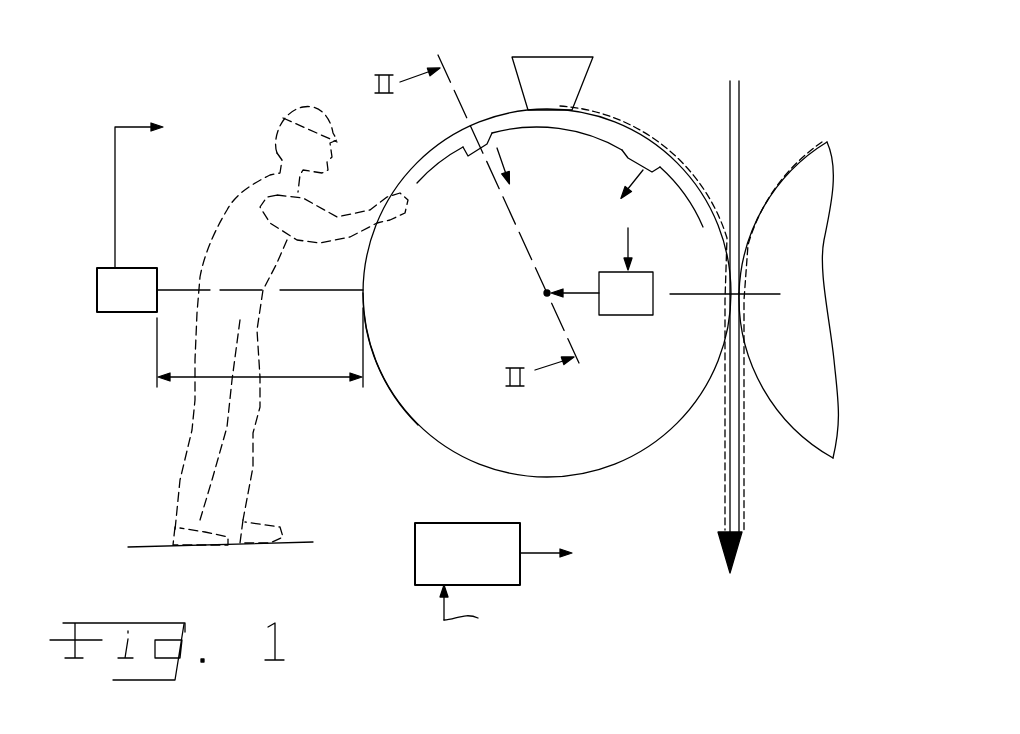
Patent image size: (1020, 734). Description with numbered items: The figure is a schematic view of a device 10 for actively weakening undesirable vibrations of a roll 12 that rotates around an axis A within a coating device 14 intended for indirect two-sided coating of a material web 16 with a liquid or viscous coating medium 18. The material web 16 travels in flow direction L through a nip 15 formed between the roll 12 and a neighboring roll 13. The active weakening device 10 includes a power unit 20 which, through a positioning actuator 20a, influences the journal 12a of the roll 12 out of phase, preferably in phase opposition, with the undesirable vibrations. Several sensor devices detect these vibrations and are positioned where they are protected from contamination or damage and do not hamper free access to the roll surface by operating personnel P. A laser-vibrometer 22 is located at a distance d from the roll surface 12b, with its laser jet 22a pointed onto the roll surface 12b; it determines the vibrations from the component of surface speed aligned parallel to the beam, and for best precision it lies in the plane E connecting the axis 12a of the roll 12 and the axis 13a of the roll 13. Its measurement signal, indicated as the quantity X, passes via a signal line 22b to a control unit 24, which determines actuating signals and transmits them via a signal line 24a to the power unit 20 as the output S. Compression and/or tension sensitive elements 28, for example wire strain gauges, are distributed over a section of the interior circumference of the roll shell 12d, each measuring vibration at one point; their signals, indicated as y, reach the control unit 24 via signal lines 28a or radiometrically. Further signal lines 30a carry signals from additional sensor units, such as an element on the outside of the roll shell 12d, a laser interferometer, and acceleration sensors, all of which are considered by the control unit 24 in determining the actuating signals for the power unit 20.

The active weakening device 10 is at (228, 75).
The roll 12 is at (608, 455).
The roll journal 12a is at (545, 292).
The roll surface 12b is at (378, 390).
The roll shell 12d is at (437, 152).
The neighboring roll 13 is at (790, 416).
The axis of neighboring roll 13a is at (845, 307).
The coating device 14 is at (783, 70).
The nip 15 is at (722, 400).
The material web 16 is at (740, 122).
The coating medium 18 is at (765, 195).
The power unit 20 is at (650, 308).
The positioning actuator 20a is at (585, 294).
The laser-vibrometer 22 is at (127, 300).
The laser jet 22a is at (237, 290).
The signal line 22b is at (113, 145).
The control unit 24 is at (447, 566).
The signal line 24a is at (628, 252).
The compression and/or tension sensitive elements 28 is at (478, 160).
The signal lines 28a is at (497, 160).
The signal line 30a is at (538, 609).
The operating personnel P is at (255, 432).
The distance d is at (243, 380).
The flow direction L is at (737, 524).
The plane E is at (773, 292).
The output signal S is at (628, 242).
The axis A is at (543, 296).
The x direction X is at (403, 533).
The y direction y is at (380, 571).